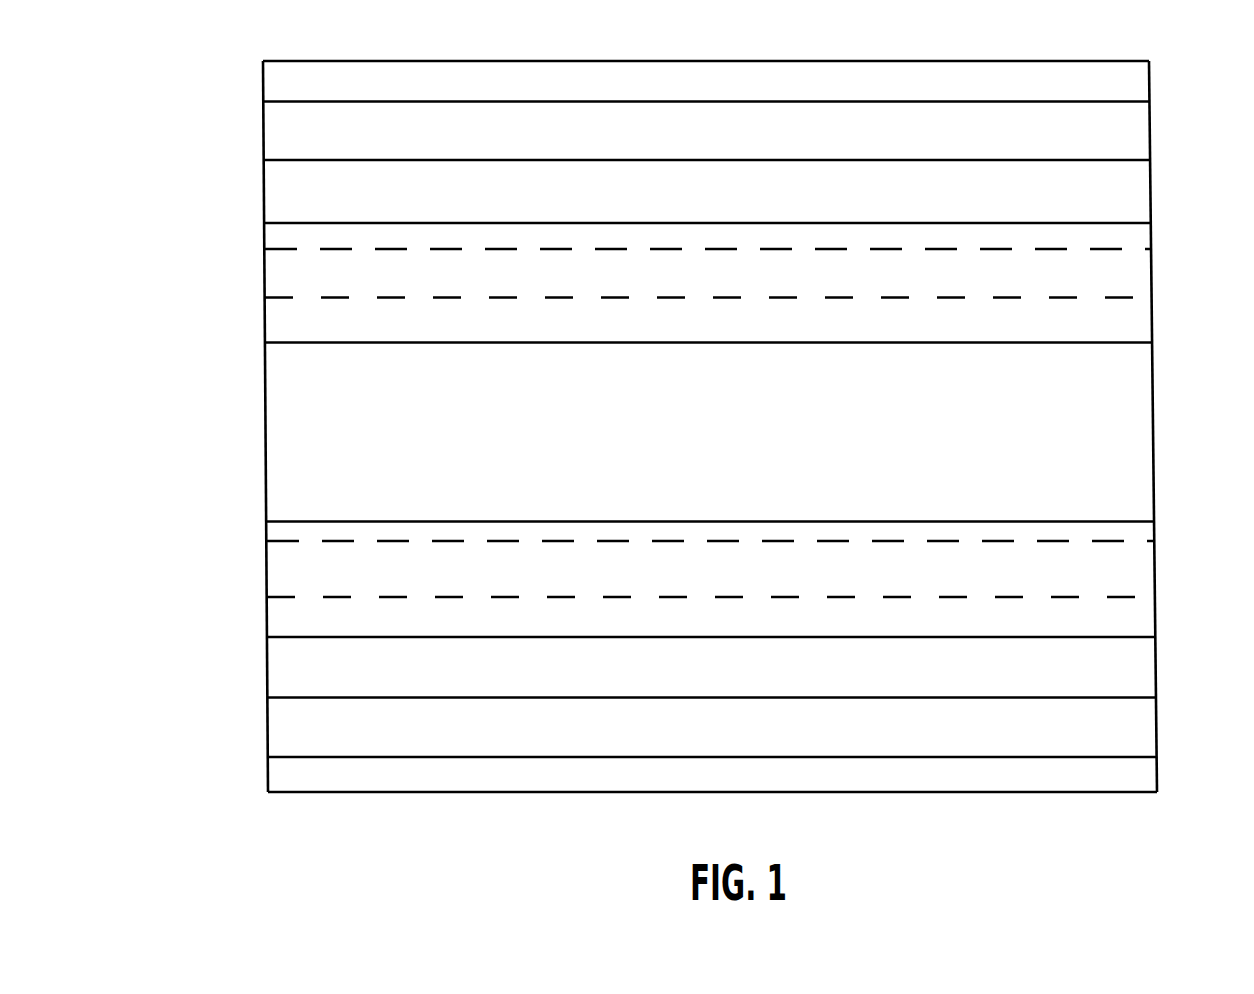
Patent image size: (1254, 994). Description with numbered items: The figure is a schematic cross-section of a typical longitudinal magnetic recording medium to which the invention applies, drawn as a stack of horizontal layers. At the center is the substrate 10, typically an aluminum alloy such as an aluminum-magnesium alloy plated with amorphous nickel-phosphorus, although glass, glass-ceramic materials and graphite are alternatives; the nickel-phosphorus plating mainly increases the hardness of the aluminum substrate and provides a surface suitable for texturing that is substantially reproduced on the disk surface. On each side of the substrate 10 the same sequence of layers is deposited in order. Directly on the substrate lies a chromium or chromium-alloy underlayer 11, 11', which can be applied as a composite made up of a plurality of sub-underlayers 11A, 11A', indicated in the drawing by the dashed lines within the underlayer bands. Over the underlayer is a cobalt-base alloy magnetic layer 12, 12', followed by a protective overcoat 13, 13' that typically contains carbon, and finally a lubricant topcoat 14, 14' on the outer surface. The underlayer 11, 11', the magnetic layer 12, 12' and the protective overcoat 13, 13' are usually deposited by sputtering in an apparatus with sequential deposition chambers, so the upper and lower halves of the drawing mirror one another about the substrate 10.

The substrate 10 is at (728, 442).
The underlayer 11 is at (740, 283).
The sub-underlayers 11A is at (659, 280).
The magnetic layer 12 is at (707, 201).
The protective overcoat 13 is at (707, 139).
The lubricant topcoat 14 is at (706, 81).
The underlayer 11' is at (746, 579).
The sub-underlayers 11A' is at (659, 578).
The magnetic layer 12' is at (711, 676).
The protective overcoat 13' is at (712, 735).
The lubricant topcoat 14' is at (712, 776).